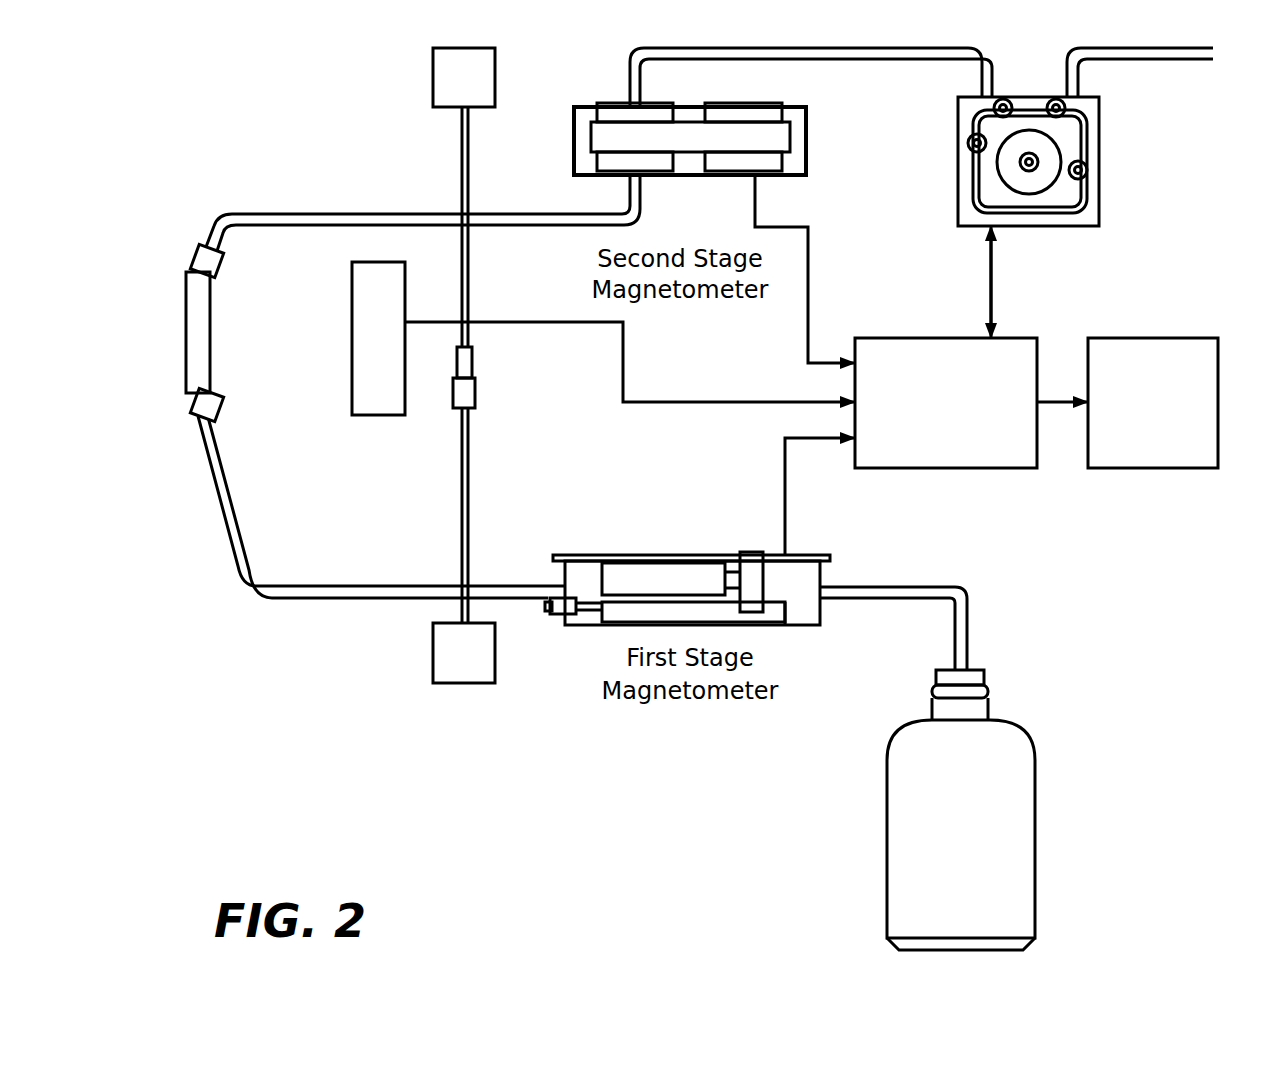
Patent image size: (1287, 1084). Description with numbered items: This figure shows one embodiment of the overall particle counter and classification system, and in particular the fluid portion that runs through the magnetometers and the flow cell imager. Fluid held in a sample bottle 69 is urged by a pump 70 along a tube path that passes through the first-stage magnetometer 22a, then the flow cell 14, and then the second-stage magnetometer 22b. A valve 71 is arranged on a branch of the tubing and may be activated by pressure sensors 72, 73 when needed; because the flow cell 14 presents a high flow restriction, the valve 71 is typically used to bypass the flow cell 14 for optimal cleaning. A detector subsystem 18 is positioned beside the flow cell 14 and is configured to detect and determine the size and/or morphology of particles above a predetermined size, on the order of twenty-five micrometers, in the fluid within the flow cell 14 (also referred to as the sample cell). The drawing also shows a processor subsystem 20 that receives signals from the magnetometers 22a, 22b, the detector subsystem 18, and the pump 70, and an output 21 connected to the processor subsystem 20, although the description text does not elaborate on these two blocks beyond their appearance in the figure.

The flow cell 14 is at (210, 370).
The detector subsystem 18 is at (375, 415).
The processor subsystem 20 is at (930, 455).
The output 21 is at (1137, 440).
The first-stage magnetometer 22a is at (597, 555).
The second-stage magnetometer 22b is at (806, 145).
The sample bottle 69 is at (944, 875).
The pump 70 is at (1099, 140).
The valve 71 is at (476, 392).
The pressure sensor 72 is at (449, 93).
The pressure sensor 73 is at (449, 668).